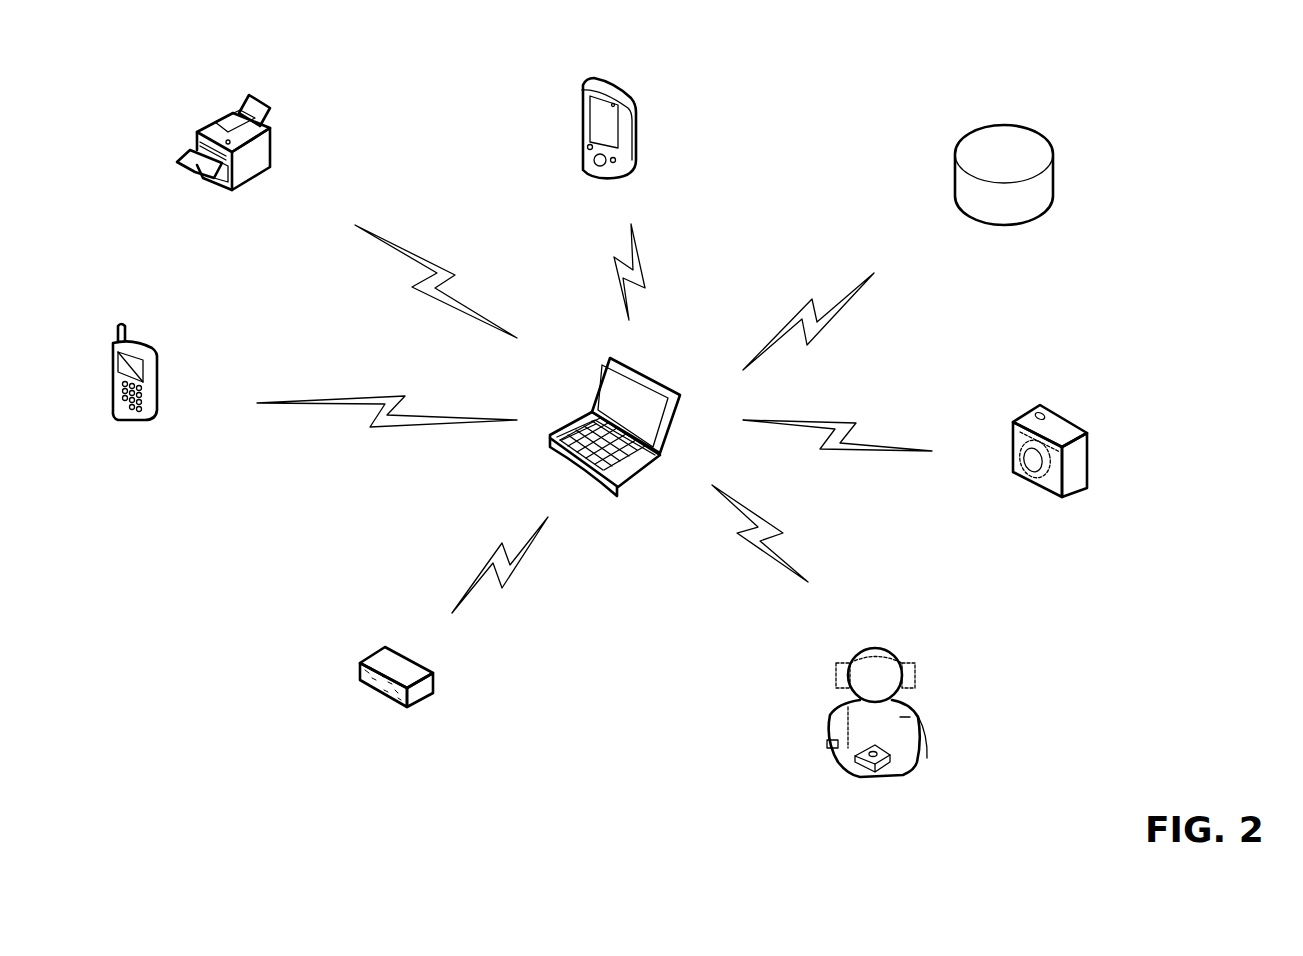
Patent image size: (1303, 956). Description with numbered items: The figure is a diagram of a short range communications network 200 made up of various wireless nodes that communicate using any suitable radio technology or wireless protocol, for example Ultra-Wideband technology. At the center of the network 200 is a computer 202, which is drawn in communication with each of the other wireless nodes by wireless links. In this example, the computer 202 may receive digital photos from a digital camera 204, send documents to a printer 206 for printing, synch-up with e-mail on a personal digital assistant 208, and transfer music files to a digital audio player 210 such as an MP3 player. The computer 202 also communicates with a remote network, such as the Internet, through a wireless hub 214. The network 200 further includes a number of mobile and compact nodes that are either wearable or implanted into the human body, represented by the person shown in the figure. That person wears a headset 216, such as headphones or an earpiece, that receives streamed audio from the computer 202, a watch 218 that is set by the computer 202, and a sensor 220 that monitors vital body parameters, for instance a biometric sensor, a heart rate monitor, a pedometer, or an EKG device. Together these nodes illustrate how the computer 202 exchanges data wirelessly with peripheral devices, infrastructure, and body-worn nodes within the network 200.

The short range communications network 200 is at (429, 85).
The computer 202 is at (596, 395).
The digital camera 204 is at (1055, 195).
The printer 206 is at (272, 166).
The personal digital assistant 208 is at (160, 387).
The digital audio player 210 is at (637, 150).
The wireless hub 214 is at (436, 674).
The headset 216 is at (916, 672).
The watch 218 is at (826, 745).
The sensor 220 is at (892, 759).